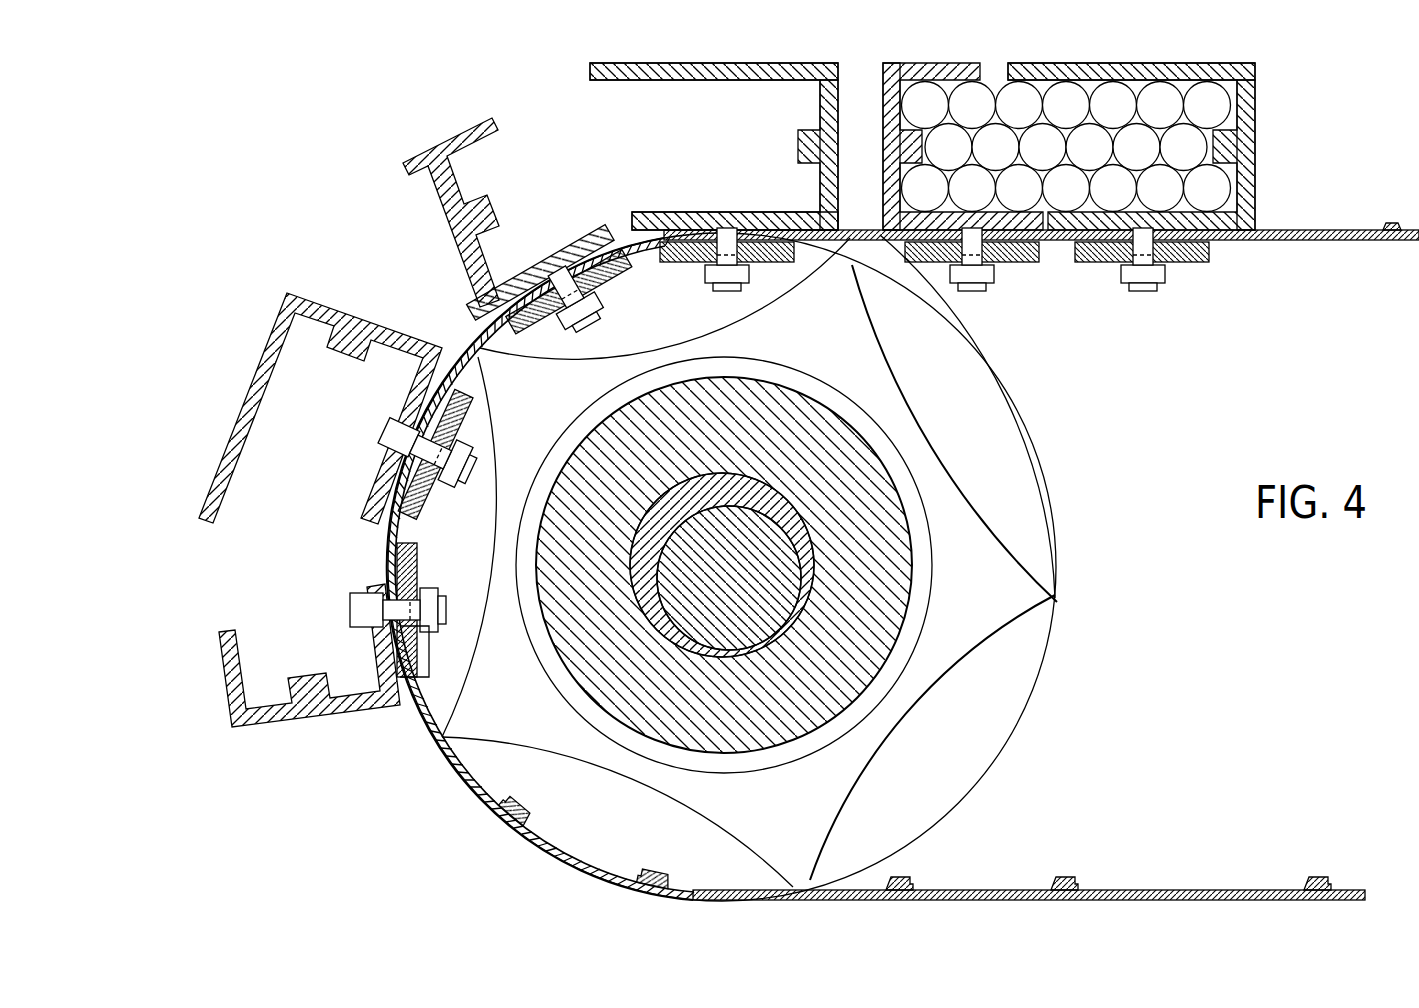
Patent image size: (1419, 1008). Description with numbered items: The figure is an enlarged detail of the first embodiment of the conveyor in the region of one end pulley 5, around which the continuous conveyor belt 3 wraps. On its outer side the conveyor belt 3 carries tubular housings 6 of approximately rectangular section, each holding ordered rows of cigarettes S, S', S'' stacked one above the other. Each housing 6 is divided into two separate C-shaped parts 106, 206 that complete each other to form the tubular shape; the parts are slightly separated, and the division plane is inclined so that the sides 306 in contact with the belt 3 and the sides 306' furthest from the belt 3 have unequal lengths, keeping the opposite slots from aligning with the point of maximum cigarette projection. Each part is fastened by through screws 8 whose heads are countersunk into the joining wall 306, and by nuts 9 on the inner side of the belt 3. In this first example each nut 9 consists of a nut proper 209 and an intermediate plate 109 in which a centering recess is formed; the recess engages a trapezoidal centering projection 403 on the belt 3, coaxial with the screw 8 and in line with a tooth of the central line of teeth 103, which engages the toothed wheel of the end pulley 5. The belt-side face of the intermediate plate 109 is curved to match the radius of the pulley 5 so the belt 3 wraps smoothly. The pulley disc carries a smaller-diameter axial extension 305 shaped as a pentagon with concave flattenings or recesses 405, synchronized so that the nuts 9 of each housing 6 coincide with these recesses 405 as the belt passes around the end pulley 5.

The conveyor belt 3 is at (1300, 240).
The end pulley 5 is at (1023, 703).
The tubular housing 6 is at (590, 63).
The through screw 8 is at (727, 222).
The nut 9 is at (993, 271).
The central line of teeth 103 is at (1080, 877).
The C-shaped housing part 106 is at (884, 110).
The intermediate plate 109 is at (412, 673).
The C-shaped housing part 206 is at (840, 100).
The nut proper 209 is at (439, 630).
The axial extension 305 is at (977, 542).
The joining wall 306 is at (887, 251).
The side furthest from the belt 306' is at (870, 165).
The centering projection 403 is at (1172, 268).
The flattening or recess 405 is at (932, 444).
The row of cigarettes S is at (1100, 174).
The row of cigarettes S' is at (1115, 134).
The row of cigarettes S'' is at (1107, 100).